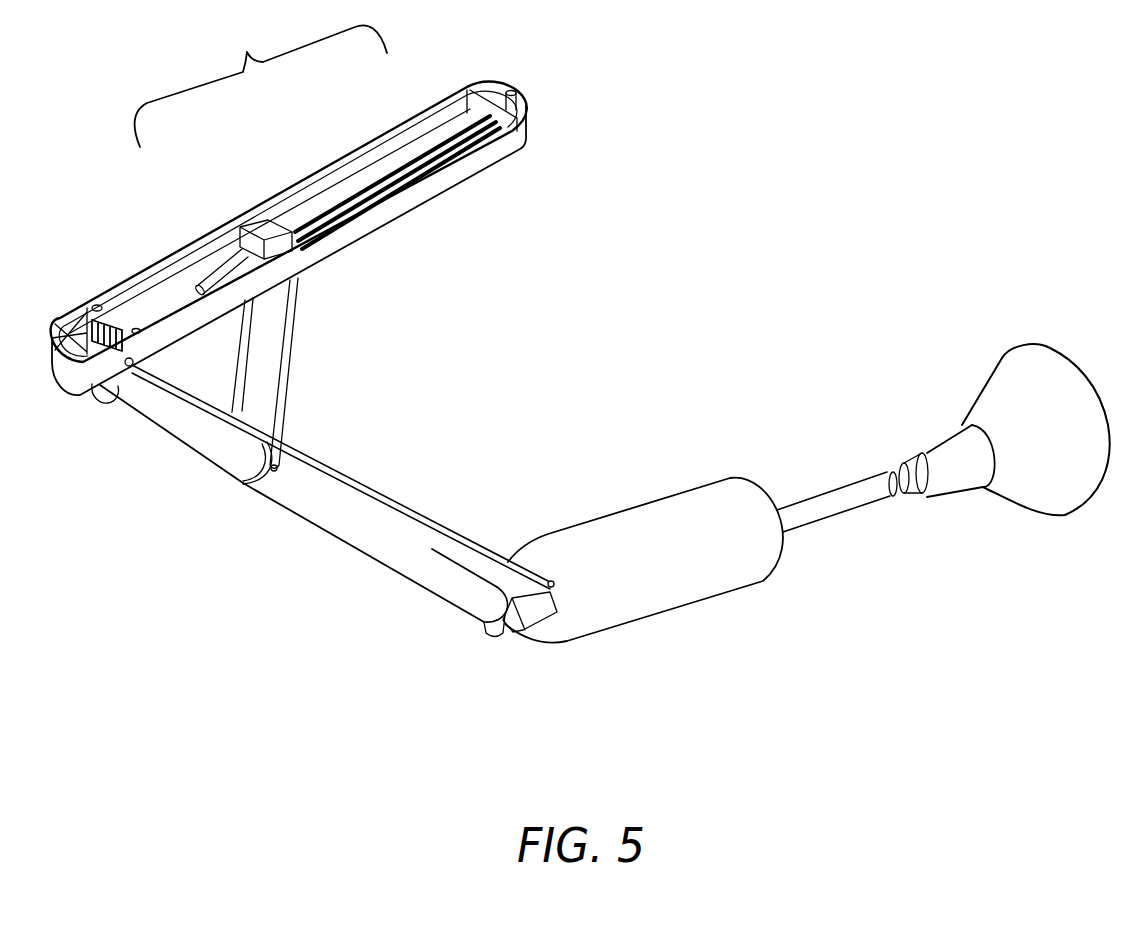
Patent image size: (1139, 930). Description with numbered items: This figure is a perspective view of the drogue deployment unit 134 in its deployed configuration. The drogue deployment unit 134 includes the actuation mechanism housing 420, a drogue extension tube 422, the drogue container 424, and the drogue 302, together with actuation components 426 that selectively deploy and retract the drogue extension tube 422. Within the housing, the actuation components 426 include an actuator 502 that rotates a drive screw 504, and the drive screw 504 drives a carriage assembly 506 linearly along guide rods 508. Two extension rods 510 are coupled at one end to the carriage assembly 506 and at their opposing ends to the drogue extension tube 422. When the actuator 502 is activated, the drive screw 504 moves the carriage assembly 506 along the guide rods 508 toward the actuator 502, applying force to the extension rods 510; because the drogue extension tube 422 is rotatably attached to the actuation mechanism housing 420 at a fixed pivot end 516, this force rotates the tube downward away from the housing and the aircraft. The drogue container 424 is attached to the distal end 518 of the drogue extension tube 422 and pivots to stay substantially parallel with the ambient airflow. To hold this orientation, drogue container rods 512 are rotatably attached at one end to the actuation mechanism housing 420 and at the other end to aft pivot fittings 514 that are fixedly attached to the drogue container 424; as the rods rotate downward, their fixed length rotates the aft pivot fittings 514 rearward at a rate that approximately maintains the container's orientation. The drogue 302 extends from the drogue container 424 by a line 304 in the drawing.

The drogue deployment unit 134 is at (903, 113).
The drogue 302 is at (1033, 488).
The cable 304 is at (153, 323).
The actuation mechanism housing 420 is at (413, 183).
The drogue extension tube 422 is at (330, 507).
The drogue container 424 is at (663, 592).
The actuation components 426 is at (260, 83).
The actuator 502 is at (247, 221).
The drive screw 504 is at (350, 197).
The carriage assembly 506 is at (292, 240).
The guide rods 508 is at (443, 153).
The extension rods 510 is at (288, 333).
The drogue container rods 512 is at (415, 515).
The aft pivot fittings 514 is at (555, 613).
The fixed pivot end 516 is at (115, 385).
The distal end 518 is at (507, 607).